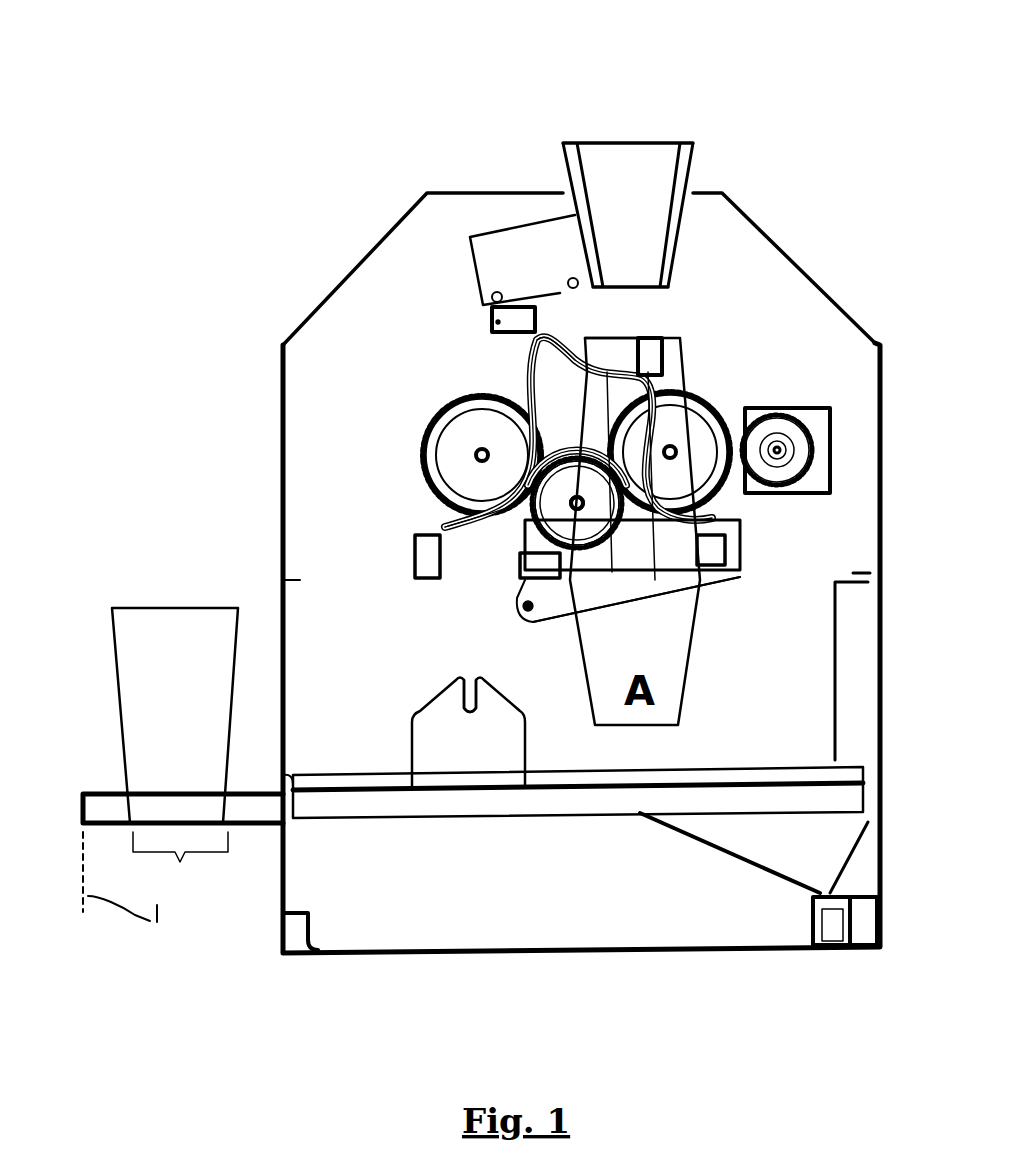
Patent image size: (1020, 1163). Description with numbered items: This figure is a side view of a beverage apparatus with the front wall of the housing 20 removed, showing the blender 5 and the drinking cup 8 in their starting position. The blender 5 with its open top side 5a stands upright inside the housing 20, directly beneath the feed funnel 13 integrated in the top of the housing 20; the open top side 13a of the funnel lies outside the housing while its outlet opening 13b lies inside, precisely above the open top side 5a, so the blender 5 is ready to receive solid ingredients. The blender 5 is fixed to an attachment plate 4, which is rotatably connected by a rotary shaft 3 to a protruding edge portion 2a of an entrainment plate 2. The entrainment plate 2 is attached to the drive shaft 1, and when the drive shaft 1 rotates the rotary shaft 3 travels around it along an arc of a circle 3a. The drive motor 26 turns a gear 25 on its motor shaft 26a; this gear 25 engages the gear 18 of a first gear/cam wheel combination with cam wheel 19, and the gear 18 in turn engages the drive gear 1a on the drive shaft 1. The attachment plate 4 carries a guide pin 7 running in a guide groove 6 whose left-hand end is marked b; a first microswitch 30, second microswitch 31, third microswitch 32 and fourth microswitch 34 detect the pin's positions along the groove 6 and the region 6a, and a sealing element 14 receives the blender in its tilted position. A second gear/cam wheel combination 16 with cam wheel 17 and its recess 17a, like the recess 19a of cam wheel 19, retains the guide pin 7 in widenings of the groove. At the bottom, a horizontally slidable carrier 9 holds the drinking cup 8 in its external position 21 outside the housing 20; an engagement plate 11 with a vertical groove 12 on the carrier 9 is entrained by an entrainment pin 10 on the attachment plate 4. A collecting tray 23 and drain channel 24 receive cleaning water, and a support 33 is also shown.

The drive shaft 1 is at (540, 522).
The drive gear 1a is at (553, 505).
The entrainment plate 2 is at (575, 493).
The protruding edge portion 2a is at (627, 505).
The rotary shaft 3 is at (652, 580).
The arc of a circle 3a is at (607, 580).
The attachment plate 4 is at (552, 605).
The blender 5 is at (680, 338).
The open top side 5a is at (592, 337).
The guide groove 6 is at (523, 377).
The belt portion 6a is at (528, 352).
The guide pin 7 is at (630, 420).
The drinking cup 8 is at (183, 622).
The carrier 9 is at (253, 810).
The entrainment pin 10 is at (530, 615).
The engagement plate 11 is at (432, 737).
The vertical groove 12 is at (465, 678).
The feed funnel 13 is at (660, 177).
The open top side 13a is at (636, 143).
The outlet opening 13b is at (633, 284).
The sealing element 14 is at (527, 248).
The second gear/cam wheel combination 16 is at (432, 413).
The cam wheel 17 is at (433, 430).
The recess 17a is at (512, 427).
The gear 18 is at (647, 433).
The cam wheel 19 is at (733, 490).
The recess 19a is at (700, 420).
The housing 20 is at (353, 268).
The external position 21 is at (180, 865).
The collecting tray 23 is at (852, 880).
The drain channel 24 is at (833, 950).
The gear 25 is at (803, 452).
The drive motor 26 is at (823, 428).
The motor shaft 26a is at (778, 455).
The first microswitch 30 is at (660, 350).
The second microswitch 31 is at (515, 320).
The third microswitch 32 is at (420, 560).
The support block 33 is at (527, 572).
The fourth microswitch 34 is at (712, 568).
The left-hand end b is at (437, 528).